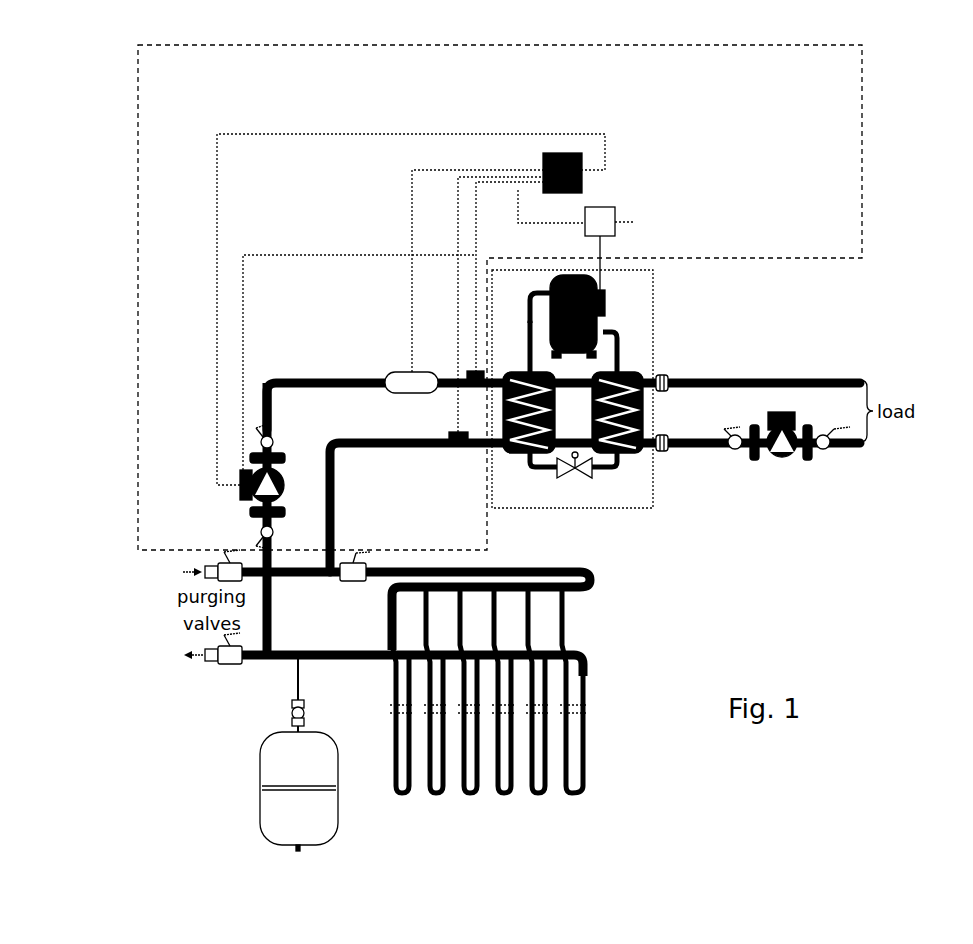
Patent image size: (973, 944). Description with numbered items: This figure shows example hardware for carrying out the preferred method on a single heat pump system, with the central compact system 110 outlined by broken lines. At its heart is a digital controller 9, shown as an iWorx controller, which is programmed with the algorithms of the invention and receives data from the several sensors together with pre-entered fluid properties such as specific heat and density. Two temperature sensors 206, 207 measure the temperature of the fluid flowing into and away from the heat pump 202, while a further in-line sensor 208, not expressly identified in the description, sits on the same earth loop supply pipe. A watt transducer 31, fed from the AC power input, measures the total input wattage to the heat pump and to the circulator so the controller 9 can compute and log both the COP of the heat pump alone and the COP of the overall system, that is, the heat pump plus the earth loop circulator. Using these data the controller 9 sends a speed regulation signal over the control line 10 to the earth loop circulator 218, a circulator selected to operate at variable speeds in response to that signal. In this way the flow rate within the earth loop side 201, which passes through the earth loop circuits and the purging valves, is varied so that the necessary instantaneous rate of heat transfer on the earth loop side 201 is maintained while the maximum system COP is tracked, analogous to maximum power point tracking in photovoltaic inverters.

The central compact system 110 is at (865, 135).
The control line 10 is at (397, 131).
The digital controller 9 is at (585, 153).
The watt transducer 31 is at (619, 203).
The temperature sensor 206 is at (470, 362).
The temperature sensor 207 is at (455, 430).
The flow sensor 208 is at (392, 364).
The earth loop circulator 218 is at (246, 508).
The earth loop side 201 is at (656, 302).
The heat pump 202 is at (572, 610).